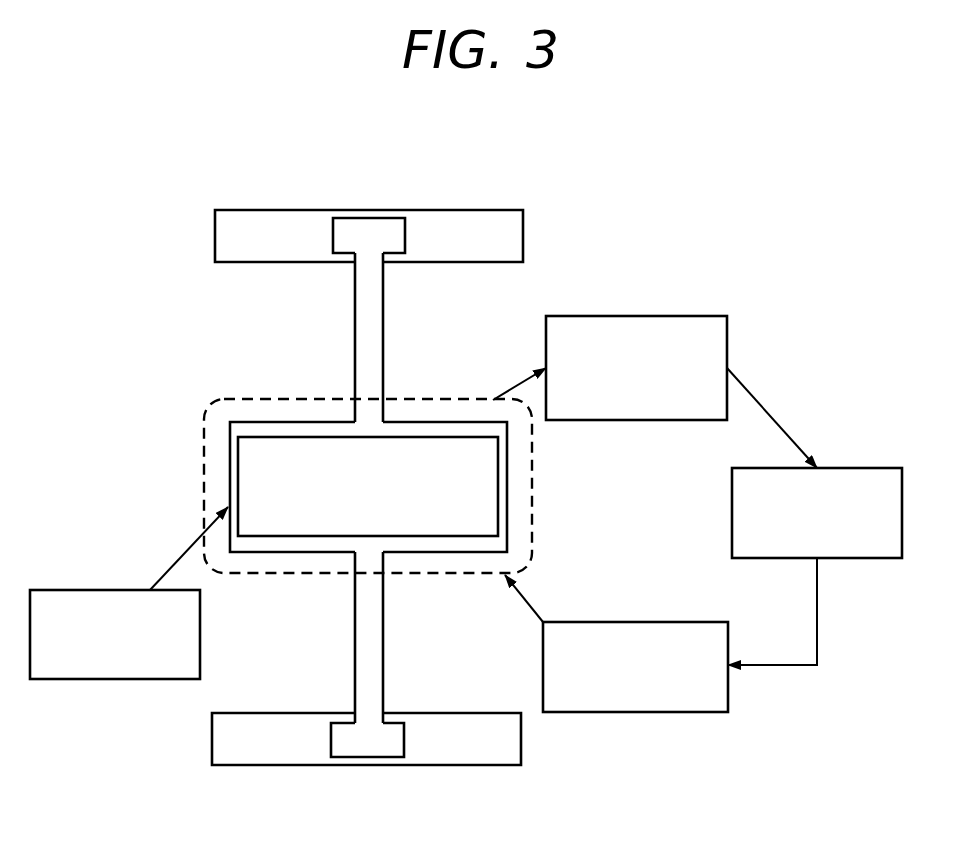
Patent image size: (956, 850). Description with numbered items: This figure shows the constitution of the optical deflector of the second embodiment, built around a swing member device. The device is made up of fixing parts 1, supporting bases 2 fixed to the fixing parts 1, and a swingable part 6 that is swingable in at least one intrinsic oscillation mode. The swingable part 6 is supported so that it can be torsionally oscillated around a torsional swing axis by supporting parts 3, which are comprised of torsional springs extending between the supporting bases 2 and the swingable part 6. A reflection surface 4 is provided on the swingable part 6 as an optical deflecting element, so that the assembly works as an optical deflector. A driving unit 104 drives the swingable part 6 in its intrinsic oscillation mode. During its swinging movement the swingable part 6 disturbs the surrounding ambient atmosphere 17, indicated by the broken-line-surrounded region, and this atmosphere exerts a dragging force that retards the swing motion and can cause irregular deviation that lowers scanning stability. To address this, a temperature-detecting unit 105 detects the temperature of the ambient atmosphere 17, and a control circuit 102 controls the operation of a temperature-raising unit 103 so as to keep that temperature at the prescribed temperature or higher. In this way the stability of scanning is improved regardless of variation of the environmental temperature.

The fixing part 1 is at (257, 210).
The supporting base 2 is at (378, 235).
The supporting part 3 is at (384, 332).
The reflection surface 4 is at (447, 525).
The swingable part 6 is at (318, 422).
The ambient atmosphere 17 is at (232, 399).
The control circuit 102 is at (860, 468).
The temperature-raising unit 103 is at (668, 712).
The driving unit 104 is at (105, 679).
The temperature-detecting unit 105 is at (675, 316).